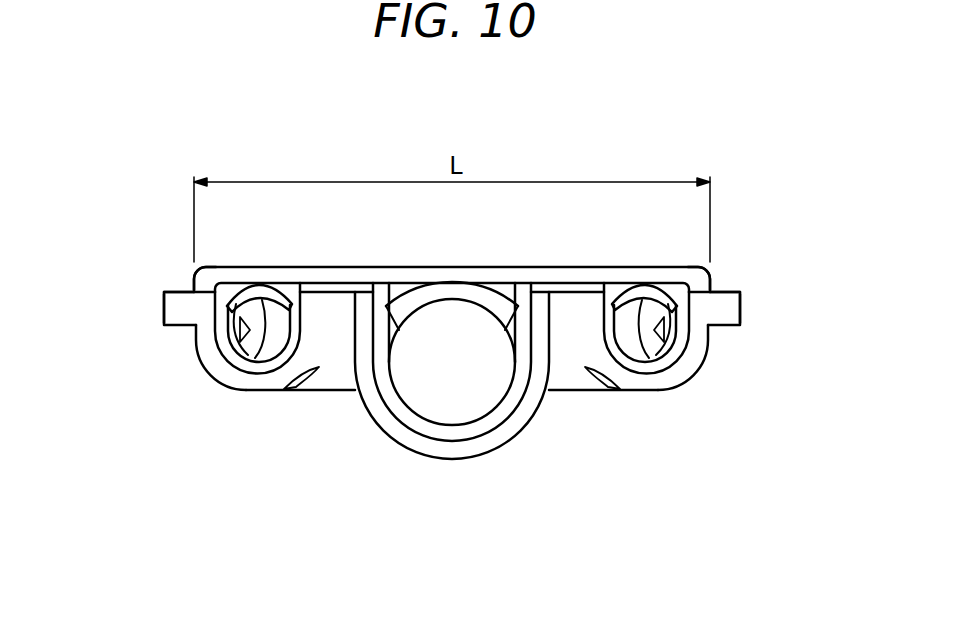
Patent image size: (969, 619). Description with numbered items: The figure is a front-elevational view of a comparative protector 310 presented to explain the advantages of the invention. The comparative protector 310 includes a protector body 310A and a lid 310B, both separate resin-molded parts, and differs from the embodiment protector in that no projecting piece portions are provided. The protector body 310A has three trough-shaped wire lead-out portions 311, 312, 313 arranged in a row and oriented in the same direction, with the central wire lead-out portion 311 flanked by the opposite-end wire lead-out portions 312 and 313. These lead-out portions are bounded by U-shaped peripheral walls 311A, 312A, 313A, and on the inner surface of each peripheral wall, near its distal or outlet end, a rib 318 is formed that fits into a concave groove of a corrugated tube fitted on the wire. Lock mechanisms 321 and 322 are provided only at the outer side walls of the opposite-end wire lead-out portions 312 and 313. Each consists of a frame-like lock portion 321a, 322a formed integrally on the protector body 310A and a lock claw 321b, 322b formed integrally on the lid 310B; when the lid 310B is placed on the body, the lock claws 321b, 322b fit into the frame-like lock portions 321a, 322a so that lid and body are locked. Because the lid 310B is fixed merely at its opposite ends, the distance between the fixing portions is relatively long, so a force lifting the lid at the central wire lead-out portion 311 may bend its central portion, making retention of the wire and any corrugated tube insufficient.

The comparative protector 310 is at (220, 402).
The protector body 310A is at (308, 403).
The lid 310B is at (356, 262).
The central wire lead-out portion 311 is at (449, 470).
The U-shaped peripheral wall 311A is at (402, 435).
The wire lead-out portion 312 is at (251, 403).
The U-shaped peripheral wall 312A is at (213, 363).
The wire lead-out portion 313 is at (647, 404).
The U-shaped peripheral wall 313A is at (670, 380).
The rib 318 is at (258, 290).
The lock mechanism 321 is at (157, 322).
The frame-like lock portion 321a is at (164, 298).
The lock claw 321b is at (192, 282).
The lock mechanism 322 is at (751, 324).
The frame-like lock portion 322a is at (740, 303).
The lock claw 322b is at (716, 282).